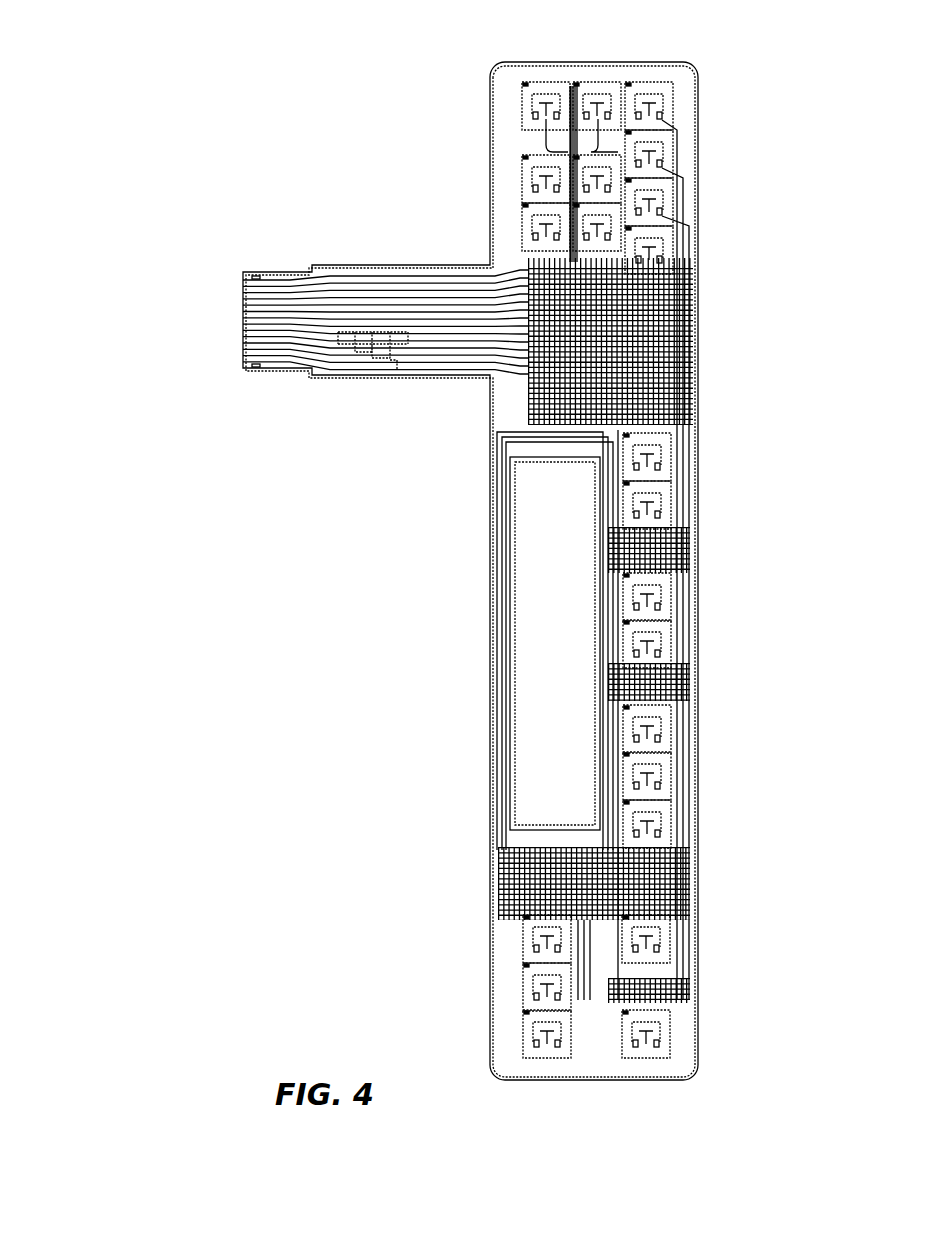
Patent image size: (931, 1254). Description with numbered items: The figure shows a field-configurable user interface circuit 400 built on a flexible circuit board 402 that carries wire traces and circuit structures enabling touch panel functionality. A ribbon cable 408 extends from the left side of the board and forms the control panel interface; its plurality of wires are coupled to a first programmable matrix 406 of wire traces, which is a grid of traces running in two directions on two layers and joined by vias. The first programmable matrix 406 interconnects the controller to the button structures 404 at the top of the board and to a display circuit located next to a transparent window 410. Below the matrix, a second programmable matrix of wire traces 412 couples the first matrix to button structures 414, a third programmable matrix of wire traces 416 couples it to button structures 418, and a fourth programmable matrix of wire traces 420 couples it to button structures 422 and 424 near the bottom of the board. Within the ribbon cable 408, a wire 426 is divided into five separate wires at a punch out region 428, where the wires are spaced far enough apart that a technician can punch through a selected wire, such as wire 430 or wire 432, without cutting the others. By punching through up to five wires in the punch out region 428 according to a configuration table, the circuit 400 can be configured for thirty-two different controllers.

The field-configurable user interface circuit 400 is at (122, 62).
The flexible circuit board 402 is at (558, 62).
The button structures 404 is at (522, 172).
The first programmable matrix 406 is at (718, 337).
The ribbon cable 408 is at (328, 240).
The transparent window 410 is at (652, 495).
The second programmable matrix of wire traces 412 is at (706, 548).
The button structures 414 is at (650, 630).
The third programmable matrix of wire traces 416 is at (702, 685).
The button structures 418 is at (652, 815).
The fourth programmable matrix of wire traces 420 is at (702, 890).
The button structures 422 is at (535, 1035).
The button structures 424 is at (660, 1030).
The wire 426 is at (276, 365).
The punch out region 428 is at (338, 345).
The wire 430 is at (355, 352).
The wire 432 is at (395, 370).